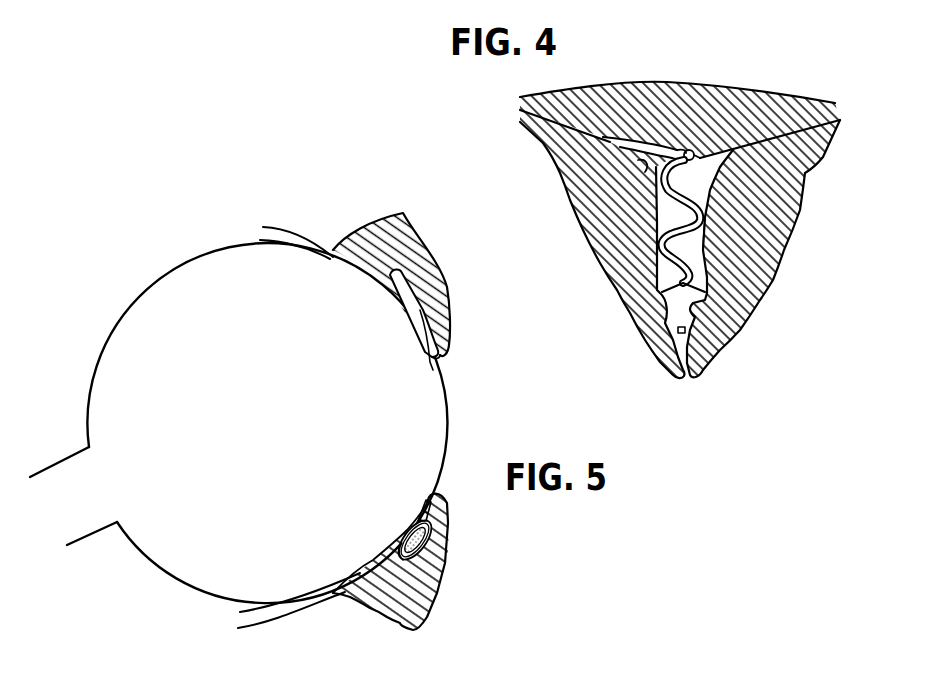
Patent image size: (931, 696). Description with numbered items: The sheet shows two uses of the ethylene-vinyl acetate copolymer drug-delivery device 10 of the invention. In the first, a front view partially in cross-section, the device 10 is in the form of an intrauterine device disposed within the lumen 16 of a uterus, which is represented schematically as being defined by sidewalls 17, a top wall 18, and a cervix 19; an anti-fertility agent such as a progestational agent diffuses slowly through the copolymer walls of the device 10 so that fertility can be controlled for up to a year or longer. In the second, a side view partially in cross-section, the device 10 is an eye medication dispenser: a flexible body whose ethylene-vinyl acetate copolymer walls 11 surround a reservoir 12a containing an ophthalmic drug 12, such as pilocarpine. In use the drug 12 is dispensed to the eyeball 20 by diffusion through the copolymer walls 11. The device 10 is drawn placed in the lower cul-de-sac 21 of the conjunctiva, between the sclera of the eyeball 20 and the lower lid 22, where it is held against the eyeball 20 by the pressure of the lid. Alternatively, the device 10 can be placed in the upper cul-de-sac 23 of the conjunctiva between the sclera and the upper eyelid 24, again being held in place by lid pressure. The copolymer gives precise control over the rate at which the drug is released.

In FIG. 4, the drug-delivery device 10 is at (700, 217).
In FIG. 5, the drug-delivery device 10 is at (397, 573).
In FIG. 5, the ethylene-vinyl acetate copolymer walls 11 is at (440, 517).
In FIG. 5, the ophthalmic drug 12 is at (437, 497).
In FIG. 5, the reservoir 12a is at (427, 547).
In FIG. 4, the lumen 16 is at (703, 187).
In FIG. 4, the sidewalls 17 is at (640, 163).
In FIG. 4, the top wall 18 is at (688, 150).
In FIG. 4, the cervix 19 is at (675, 323).
In FIG. 5, the eyeball 20 is at (450, 409).
In FIG. 5, the lower cul-de-sac 21 is at (437, 573).
In FIG. 5, the lower lid 22 is at (430, 531).
In FIG. 5, the upper cul-de-sac 23 is at (441, 356).
In FIG. 5, the upper eyelid 24 is at (428, 280).